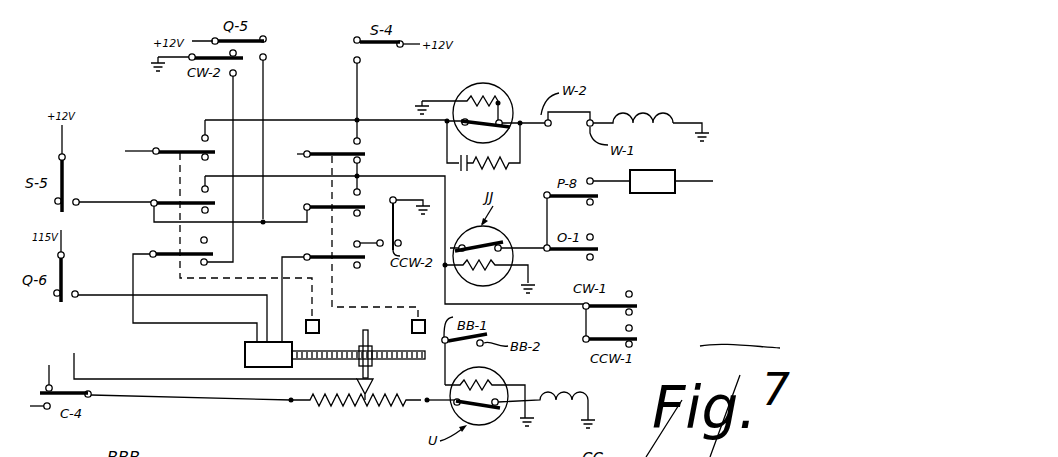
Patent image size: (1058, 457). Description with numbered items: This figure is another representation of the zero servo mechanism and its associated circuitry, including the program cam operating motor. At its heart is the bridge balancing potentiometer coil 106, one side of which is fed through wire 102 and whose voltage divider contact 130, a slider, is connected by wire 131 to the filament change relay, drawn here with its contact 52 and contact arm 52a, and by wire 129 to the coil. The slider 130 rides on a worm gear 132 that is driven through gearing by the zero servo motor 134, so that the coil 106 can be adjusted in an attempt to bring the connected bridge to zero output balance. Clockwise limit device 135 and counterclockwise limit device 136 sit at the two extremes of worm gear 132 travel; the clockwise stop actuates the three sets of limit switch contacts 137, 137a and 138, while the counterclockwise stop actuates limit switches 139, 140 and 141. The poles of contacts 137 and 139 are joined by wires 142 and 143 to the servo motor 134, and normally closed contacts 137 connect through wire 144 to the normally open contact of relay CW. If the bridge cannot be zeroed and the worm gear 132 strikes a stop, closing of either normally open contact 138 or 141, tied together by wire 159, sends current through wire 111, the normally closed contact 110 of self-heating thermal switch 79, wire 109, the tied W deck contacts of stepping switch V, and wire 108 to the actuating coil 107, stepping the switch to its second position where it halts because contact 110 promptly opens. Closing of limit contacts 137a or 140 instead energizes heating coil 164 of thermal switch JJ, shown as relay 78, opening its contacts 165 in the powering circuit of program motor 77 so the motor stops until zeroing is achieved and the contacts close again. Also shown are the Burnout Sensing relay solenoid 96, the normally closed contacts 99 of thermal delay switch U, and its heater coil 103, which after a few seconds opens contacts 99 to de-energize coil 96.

The filament change relay contact 52 is at (30, 406).
The filament change relay contact arm 52a is at (49, 372).
The program motor 77 is at (682, 181).
The thermal switch 78 is at (451, 246).
The self-heating delay switch 79 is at (486, 84).
The actuating solenoid 96 is at (569, 393).
The normally closed contacts 99 is at (481, 408).
The wire 102 is at (420, 407).
The heater coil 103 is at (486, 372).
The bridge balancing potentiometer coil 106 is at (341, 405).
The actuating coil 107 is at (658, 112).
The wire 108 is at (619, 120).
The wire 109 is at (525, 128).
The normally closed contact 110 is at (460, 134).
The wire 111 is at (386, 119).
The conductor 129 is at (289, 403).
The voltage divider contact 130 is at (373, 387).
The wire 131 is at (74, 353).
The worm gear 132 is at (365, 330).
The zero servo motor 134 is at (242, 360).
The clockwise limit device 135 is at (309, 334).
The counterclockwise limit device 136 is at (418, 334).
The limit switch contacts 137 is at (176, 251).
The limit switch contacts 137a is at (193, 199).
The limit switch contacts 138 is at (152, 140).
The limit switch 139 is at (339, 253).
The limit switch 140 is at (331, 200).
The limit switch 141 is at (315, 146).
The wire 142 is at (133, 282).
The wire 143 is at (282, 271).
The wire 144 is at (233, 100).
The wire 159 is at (286, 119).
The heating coil 164 is at (462, 290).
The contacts 165 is at (499, 240).